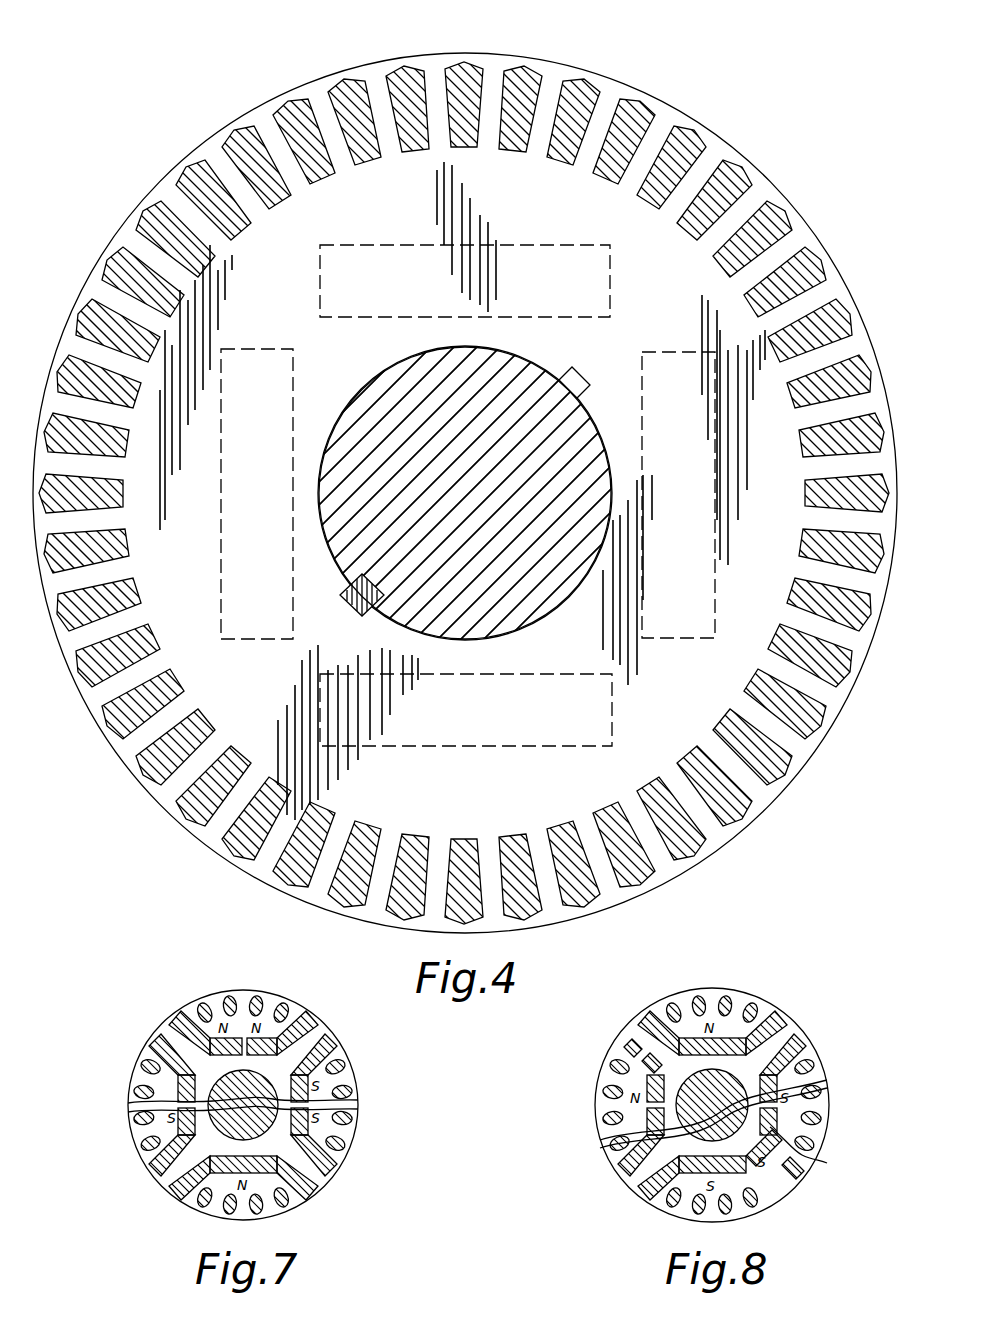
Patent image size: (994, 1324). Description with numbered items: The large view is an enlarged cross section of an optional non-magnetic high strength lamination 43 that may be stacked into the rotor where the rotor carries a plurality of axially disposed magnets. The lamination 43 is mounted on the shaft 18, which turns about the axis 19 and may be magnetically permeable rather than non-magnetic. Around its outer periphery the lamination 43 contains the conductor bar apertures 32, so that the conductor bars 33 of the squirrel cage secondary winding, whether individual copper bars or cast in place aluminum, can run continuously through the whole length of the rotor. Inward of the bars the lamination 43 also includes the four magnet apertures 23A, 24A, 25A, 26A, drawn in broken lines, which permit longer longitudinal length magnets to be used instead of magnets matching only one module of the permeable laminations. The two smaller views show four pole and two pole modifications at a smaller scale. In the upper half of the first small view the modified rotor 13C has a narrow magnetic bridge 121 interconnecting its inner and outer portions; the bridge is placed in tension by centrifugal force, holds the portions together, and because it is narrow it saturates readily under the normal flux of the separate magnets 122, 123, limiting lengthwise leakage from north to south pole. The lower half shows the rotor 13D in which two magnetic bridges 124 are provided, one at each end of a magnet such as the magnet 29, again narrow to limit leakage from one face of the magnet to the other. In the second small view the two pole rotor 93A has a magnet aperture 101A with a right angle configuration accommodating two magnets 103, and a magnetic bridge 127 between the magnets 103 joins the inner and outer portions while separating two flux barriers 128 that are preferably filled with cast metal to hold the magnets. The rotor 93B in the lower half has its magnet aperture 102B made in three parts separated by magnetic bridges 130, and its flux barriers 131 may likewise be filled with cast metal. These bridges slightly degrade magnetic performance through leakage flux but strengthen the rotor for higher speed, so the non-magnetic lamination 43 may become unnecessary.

In FIG. 4, the non-magnetic high strength lamination 43 is at (668, 120).
In FIG. 4, the conductor bars 33 is at (408, 78).
In FIG. 4, the conductor bar apertures 32 is at (290, 105).
In FIG. 4, the shaft 18 is at (552, 525).
In FIG. 4, the axis 19 is at (464, 492).
In FIG. 4, the magnet aperture 23A is at (420, 248).
In FIG. 4, the magnet aperture 24A is at (712, 572).
In FIG. 4, the magnet aperture 25A is at (456, 746).
In FIG. 4, the magnet aperture 26A is at (222, 560).
In FIG. 7, the magnet 29 is at (227, 1153).
In FIG. 7, the magnetic bridge 121 is at (237, 999).
In FIG. 7, the magnet 122 is at (174, 1020).
In FIG. 7, the magnet 123 is at (301, 1013).
In FIG. 7, the magnetic bridges 124 is at (150, 1167).
In FIG. 7, the modified rotor 13C is at (306, 1011).
In FIG. 7, the rotor 13D is at (324, 1177).
In FIG. 8, the magnet aperture 101A is at (712, 997).
In FIG. 8, the magnet aperture 102B is at (669, 1189).
In FIG. 8, the magnets 103 is at (666, 1025).
In FIG. 8, the magnetic bridge 127 is at (630, 1017).
In FIG. 8, the flux barriers 128 is at (619, 1014).
In FIG. 8, the magnetic bridges 130 is at (830, 1182).
In FIG. 8, the flux barriers 131 is at (819, 1119).
In FIG. 8, the two pole rotor 93A is at (785, 1019).
In FIG. 8, the rotor 93B is at (746, 1165).